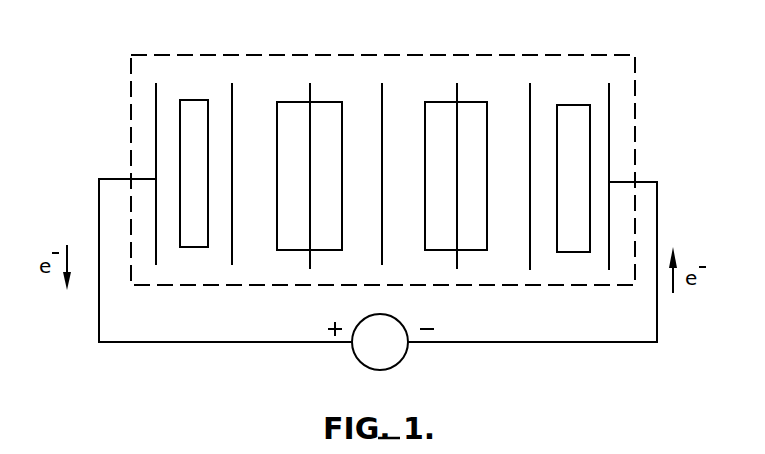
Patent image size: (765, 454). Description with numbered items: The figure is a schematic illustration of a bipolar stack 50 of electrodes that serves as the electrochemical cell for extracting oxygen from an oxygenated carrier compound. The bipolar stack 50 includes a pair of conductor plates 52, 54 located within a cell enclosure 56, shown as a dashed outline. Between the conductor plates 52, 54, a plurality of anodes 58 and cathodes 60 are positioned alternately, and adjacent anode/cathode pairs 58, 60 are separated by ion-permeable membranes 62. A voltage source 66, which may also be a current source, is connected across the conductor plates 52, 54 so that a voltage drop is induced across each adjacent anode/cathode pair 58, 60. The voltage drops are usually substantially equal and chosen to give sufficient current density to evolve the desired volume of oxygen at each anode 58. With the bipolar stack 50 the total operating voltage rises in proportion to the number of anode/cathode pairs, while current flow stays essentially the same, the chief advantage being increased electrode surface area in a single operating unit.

The bipolar stack 50 is at (680, 54).
The conductor plate 52 is at (156, 113).
The conductor plate 54 is at (610, 125).
The cell enclosure 56 is at (610, 55).
The anode 58 is at (193, 110).
The cathode 60 is at (292, 112).
The ion-permeable membrane 62 is at (233, 252).
The voltage source 66 is at (393, 356).